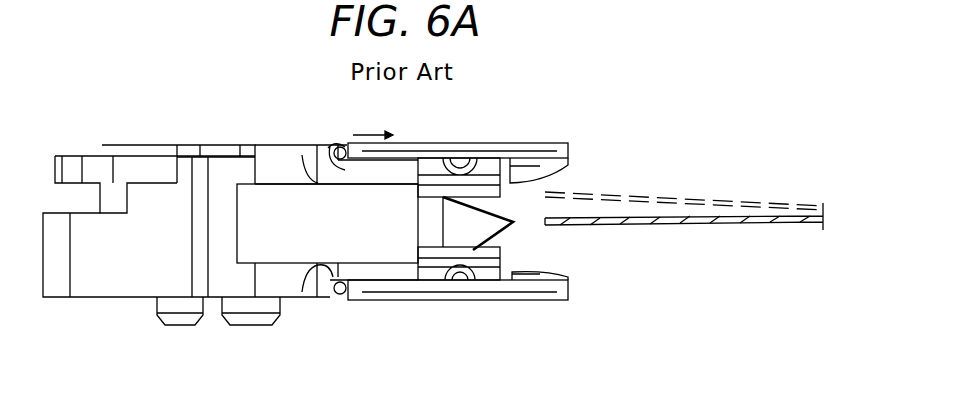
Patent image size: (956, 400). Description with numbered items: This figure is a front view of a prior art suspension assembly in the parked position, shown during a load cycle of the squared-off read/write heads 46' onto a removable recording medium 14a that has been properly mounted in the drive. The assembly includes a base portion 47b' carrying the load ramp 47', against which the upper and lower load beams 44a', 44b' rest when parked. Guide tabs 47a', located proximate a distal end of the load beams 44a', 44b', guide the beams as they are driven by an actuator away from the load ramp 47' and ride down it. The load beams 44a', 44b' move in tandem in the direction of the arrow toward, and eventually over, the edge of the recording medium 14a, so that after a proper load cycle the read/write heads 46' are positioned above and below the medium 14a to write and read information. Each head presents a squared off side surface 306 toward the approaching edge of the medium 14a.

The fixed body of connector 47b' is at (230, 235).
The load ramp 47' is at (327, 223).
The guide tabs 47a' is at (312, 223).
The load beam 44a' is at (458, 154).
The load beam 44b' is at (458, 289).
The squared off side surface 306 is at (530, 188).
The read/write heads 46' is at (438, 223).
The removable recording medium 14a is at (707, 198).